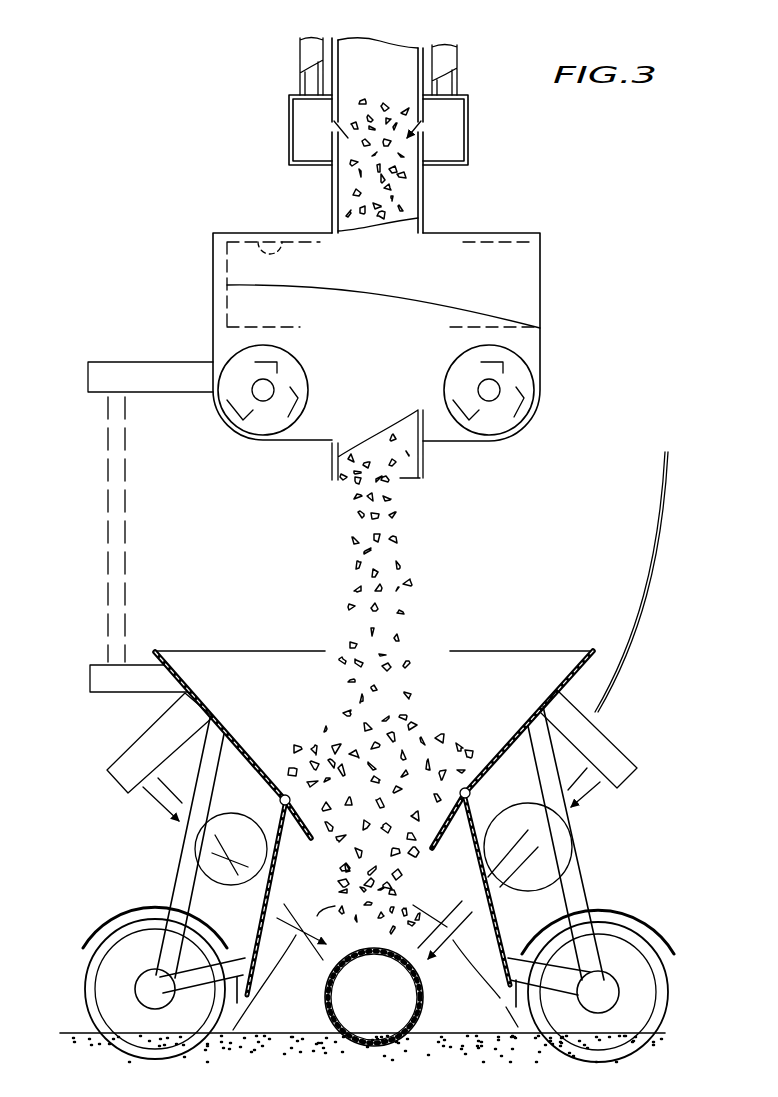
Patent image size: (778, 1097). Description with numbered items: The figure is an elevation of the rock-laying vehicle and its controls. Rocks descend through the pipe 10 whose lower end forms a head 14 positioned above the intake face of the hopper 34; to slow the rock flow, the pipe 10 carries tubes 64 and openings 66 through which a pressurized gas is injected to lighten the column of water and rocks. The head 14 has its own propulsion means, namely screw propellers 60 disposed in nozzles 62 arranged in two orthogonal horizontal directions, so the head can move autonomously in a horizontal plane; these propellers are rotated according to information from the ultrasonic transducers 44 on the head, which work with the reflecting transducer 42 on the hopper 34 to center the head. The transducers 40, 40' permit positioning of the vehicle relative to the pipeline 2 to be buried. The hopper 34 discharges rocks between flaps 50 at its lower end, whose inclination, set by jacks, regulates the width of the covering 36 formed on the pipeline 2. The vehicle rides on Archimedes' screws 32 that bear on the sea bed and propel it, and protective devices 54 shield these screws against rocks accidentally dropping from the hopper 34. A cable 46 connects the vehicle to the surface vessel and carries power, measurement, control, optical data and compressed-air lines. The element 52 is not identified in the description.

The pipe 10 is at (370, 58).
The tubes 64 is at (306, 58).
The openings 66 is at (330, 127).
The nozzles 62 is at (282, 232).
The head 14 is at (188, 222).
The screw propellers 60 is at (492, 362).
The transducers 44 is at (133, 364).
The transducer 42 is at (118, 686).
The hopper 34 is at (547, 632).
The cable 46 is at (657, 546).
The transducers 40 is at (141, 759).
The transducers 40' is at (599, 748).
The pressure tank 52 is at (512, 817).
The flaps 50 is at (308, 843).
The covering 36 is at (413, 905).
The protective devices 54 is at (627, 911).
The pipeline 2 is at (322, 995).
The Archimedes' screws 32 is at (656, 1010).